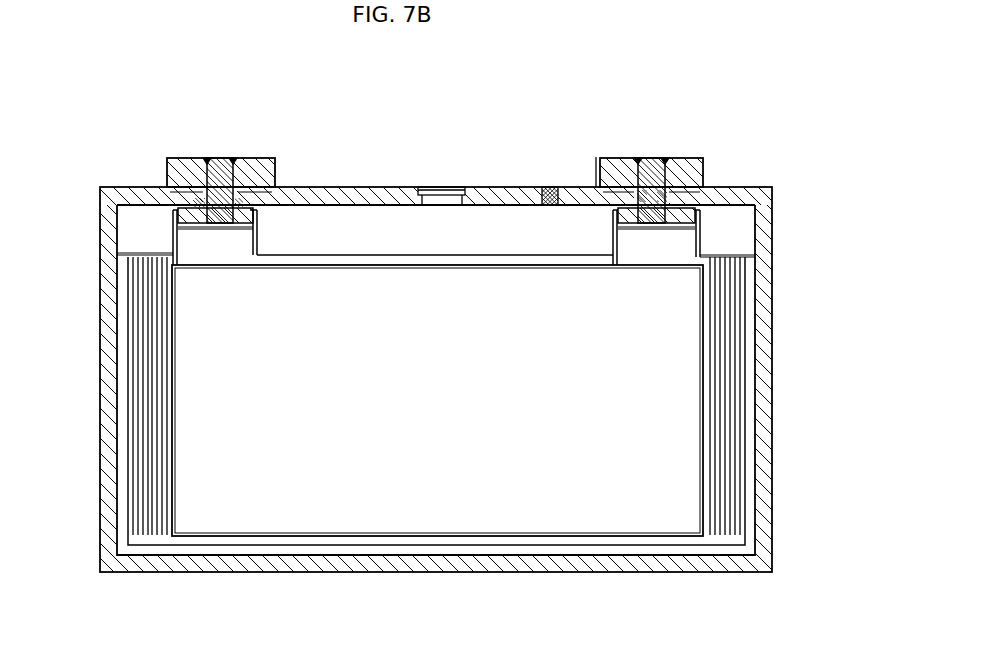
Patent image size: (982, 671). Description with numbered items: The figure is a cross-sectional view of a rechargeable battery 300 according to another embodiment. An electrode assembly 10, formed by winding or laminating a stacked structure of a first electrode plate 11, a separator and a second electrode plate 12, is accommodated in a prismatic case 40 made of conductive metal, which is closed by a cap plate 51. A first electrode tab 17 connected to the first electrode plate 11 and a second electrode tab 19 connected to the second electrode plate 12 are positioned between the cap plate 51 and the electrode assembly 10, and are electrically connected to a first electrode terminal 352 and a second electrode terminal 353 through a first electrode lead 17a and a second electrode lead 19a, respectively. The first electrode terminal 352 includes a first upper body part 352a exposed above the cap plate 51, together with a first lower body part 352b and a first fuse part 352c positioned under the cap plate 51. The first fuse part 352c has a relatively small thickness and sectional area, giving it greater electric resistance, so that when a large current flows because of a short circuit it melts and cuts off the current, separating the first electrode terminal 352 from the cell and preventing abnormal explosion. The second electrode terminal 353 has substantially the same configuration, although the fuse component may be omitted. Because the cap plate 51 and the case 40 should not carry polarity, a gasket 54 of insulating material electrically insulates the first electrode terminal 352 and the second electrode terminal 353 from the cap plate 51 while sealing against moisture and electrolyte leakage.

The rechargeable battery 300 is at (491, 348).
The electrode assembly 10 is at (470, 550).
The first electrode plate 11 is at (710, 540).
The second electrode plate 12 is at (185, 535).
The case 40 is at (263, 563).
The cap plate 51 is at (345, 187).
The gasket 54 is at (170, 192).
The first electrode tab 17 is at (660, 247).
The first electrode lead 17a is at (672, 228).
The second electrode tab 19 is at (213, 247).
The second electrode lead 19a is at (200, 230).
The first electrode terminal 352 is at (491, 323).
The first upper body part 352a is at (693, 158).
The first lower body part 352b is at (650, 158).
The first fuse part 352c is at (591, 146).
The second electrode terminal 353 is at (258, 158).